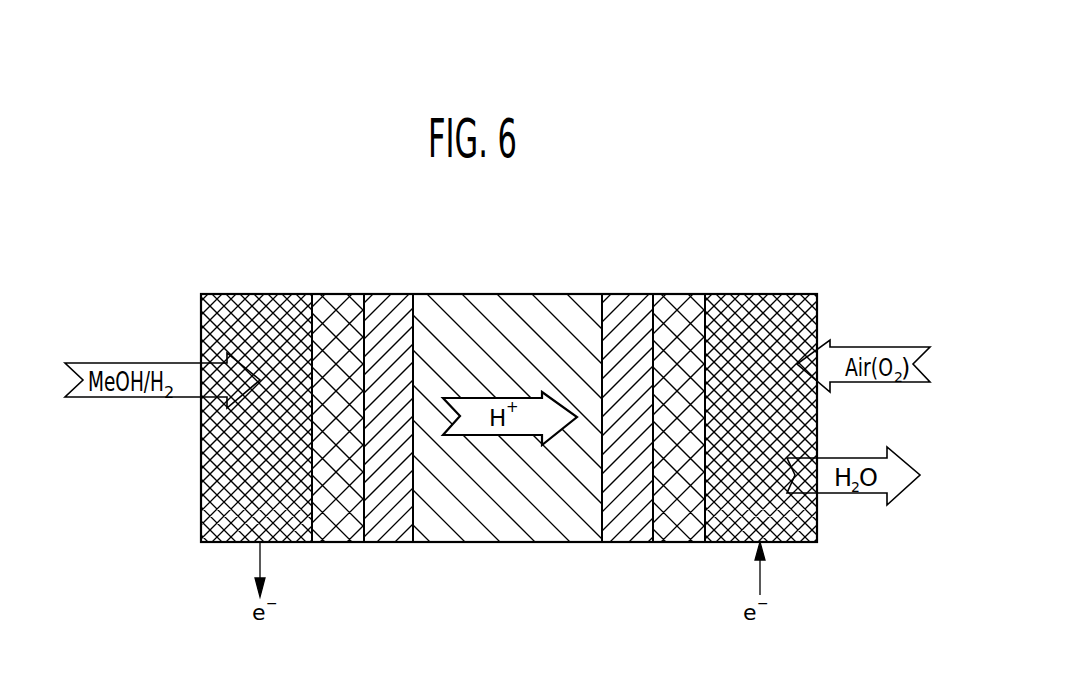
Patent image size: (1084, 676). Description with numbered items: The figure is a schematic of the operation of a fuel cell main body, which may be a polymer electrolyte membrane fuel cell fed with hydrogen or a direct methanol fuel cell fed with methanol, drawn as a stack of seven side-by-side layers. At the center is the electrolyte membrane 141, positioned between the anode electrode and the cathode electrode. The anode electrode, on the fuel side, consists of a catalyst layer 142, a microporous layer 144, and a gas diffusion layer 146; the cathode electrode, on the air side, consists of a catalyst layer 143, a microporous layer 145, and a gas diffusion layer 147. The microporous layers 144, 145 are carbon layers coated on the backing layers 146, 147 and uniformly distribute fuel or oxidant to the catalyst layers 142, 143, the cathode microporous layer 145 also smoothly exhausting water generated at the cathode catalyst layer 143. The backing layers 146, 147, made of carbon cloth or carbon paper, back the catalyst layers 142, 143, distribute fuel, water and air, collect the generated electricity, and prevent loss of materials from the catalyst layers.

The electrolyte membrane 141 is at (505, 305).
The catalyst layer 142 is at (397, 303).
The catalyst layer 143 is at (622, 305).
The microporous layer 144 is at (345, 305).
The microporous layer 145 is at (682, 305).
The gas diffusion layer 146 is at (257, 303).
The gas diffusion layer 147 is at (747, 305).